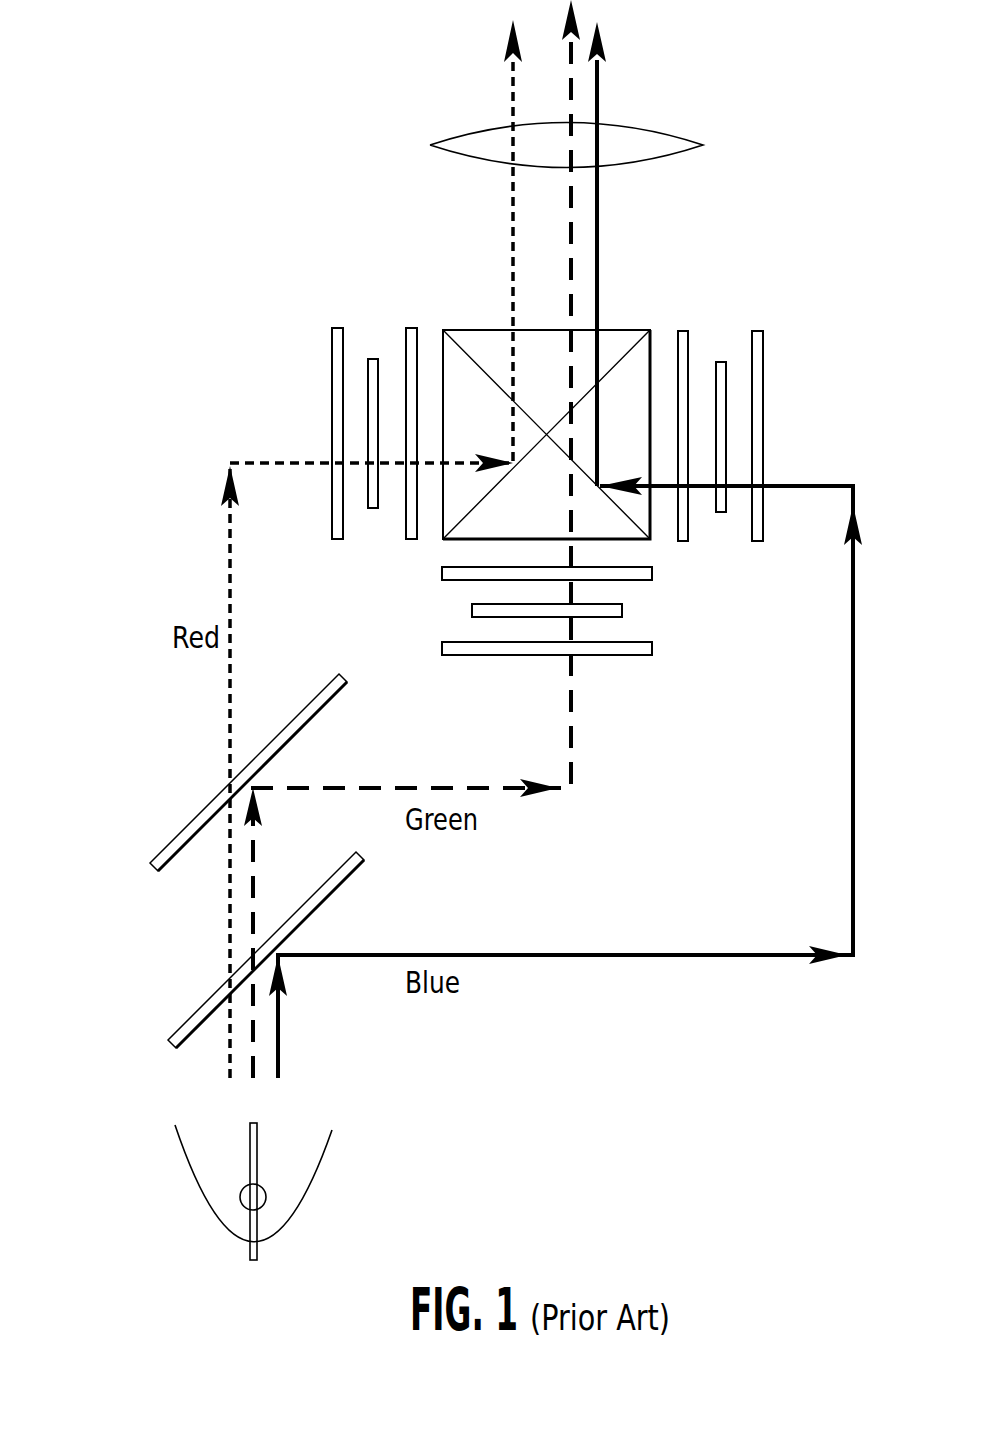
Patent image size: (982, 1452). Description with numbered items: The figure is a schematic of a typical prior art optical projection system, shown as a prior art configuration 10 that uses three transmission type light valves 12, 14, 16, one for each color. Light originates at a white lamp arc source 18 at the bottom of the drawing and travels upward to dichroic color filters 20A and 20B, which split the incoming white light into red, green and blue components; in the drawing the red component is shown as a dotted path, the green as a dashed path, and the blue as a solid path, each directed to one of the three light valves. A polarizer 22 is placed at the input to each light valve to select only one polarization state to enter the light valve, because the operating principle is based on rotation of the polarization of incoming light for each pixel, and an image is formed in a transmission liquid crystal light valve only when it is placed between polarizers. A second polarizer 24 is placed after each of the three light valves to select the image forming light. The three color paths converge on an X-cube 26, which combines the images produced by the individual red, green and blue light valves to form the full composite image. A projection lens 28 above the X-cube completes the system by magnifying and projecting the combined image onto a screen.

The prior art configuration 10 is at (158, 356).
The transmission type light valve 12 is at (372, 358).
The transmission type light valve 14 is at (472, 610).
The transmission type light valve 16 is at (721, 361).
The white lamp arc source 18 is at (332, 1155).
The dichroic color filter 20A is at (168, 1042).
The dichroic color filter 20B is at (150, 866).
The polarizer 22 is at (335, 328).
The second polarizer 24 is at (411, 328).
The X-cube 26 is at (643, 517).
The projection lens 28 is at (703, 145).